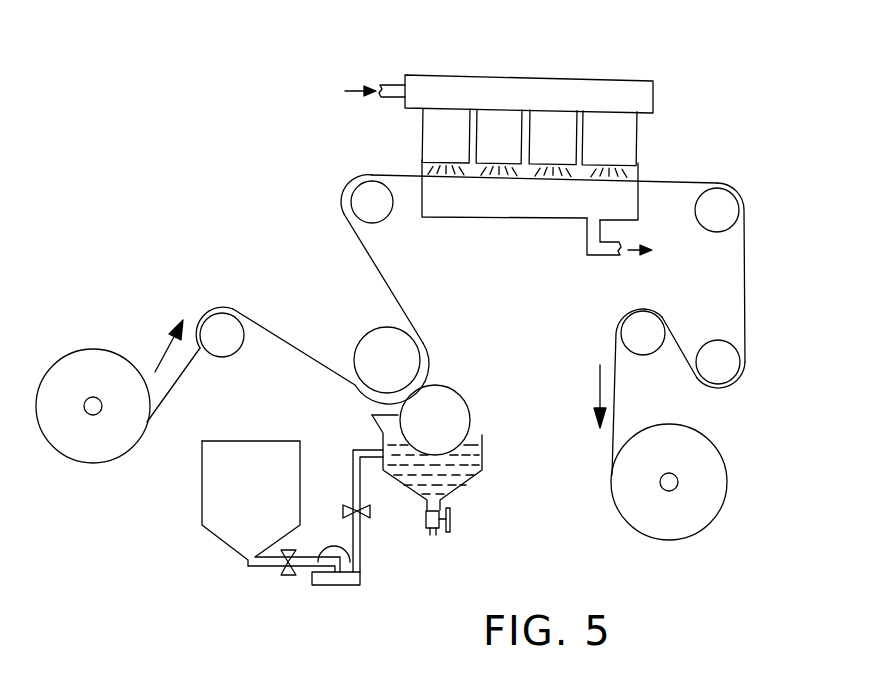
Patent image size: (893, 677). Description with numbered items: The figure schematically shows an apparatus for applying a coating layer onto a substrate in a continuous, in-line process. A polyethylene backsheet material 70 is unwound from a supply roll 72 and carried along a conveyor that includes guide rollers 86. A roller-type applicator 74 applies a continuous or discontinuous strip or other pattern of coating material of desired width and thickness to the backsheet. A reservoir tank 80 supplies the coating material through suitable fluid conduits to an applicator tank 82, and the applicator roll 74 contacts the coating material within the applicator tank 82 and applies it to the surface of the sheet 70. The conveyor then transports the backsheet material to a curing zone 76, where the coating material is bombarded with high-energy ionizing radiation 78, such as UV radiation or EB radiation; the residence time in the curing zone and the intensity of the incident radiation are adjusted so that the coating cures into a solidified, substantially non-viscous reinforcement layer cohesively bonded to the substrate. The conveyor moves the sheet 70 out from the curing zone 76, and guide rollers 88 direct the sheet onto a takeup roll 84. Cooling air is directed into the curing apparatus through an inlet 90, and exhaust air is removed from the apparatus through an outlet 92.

The polyethylene backsheet material 70 is at (177, 367).
The supply roll 72 is at (98, 350).
The roller-type applicator 74 is at (467, 402).
The curing zone 76 is at (442, 210).
The high-energy ionizing radiation 78 is at (430, 171).
The reservoir tank 80 is at (202, 505).
The applicator tank 82 is at (482, 458).
The takeup roll 84 is at (719, 460).
The guide rollers 86 is at (228, 353).
The guide rollers 88 is at (723, 232).
The inlet 90 is at (397, 86).
The outlet 92 is at (615, 255).